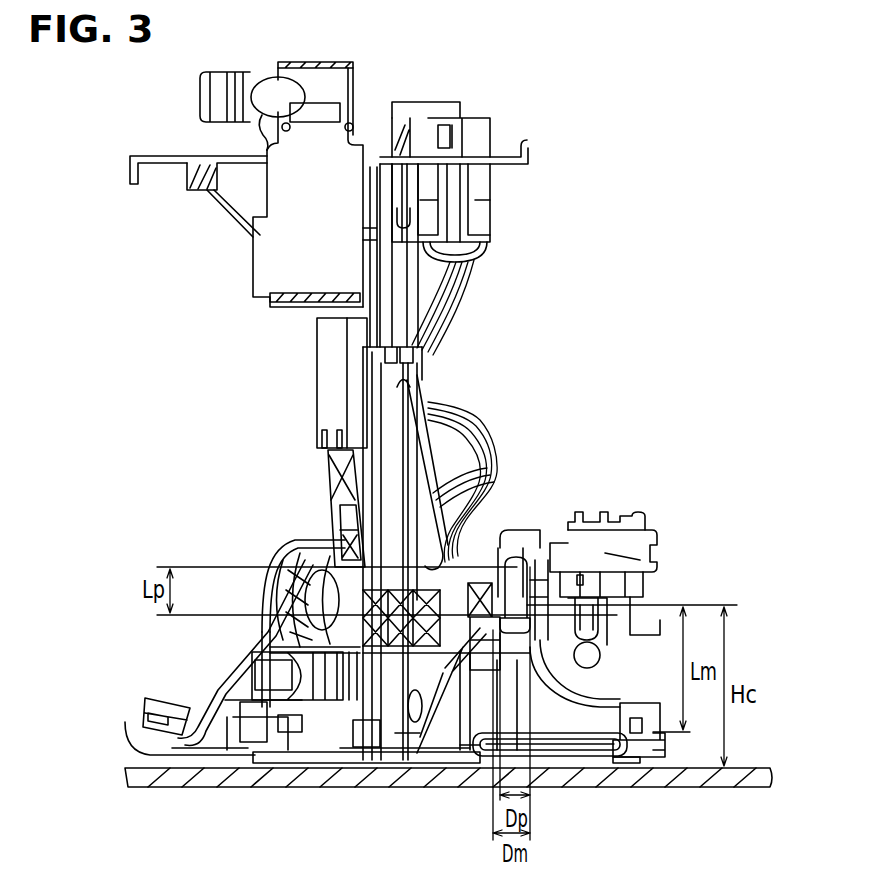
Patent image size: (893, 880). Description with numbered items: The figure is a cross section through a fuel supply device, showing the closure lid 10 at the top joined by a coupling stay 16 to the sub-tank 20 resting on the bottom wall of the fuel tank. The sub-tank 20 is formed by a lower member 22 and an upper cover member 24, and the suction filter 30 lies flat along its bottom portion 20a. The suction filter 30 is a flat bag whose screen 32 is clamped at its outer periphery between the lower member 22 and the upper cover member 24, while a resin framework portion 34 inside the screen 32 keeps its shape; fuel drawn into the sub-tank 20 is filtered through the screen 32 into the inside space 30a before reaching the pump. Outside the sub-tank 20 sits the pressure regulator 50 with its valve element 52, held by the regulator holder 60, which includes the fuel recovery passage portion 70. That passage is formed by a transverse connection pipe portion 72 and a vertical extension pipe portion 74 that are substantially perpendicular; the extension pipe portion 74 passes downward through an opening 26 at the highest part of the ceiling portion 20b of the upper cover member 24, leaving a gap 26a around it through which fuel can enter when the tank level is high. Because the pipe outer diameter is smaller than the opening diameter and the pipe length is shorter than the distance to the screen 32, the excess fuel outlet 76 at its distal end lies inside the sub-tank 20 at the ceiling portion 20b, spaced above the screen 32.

The closure lid 10 is at (527, 140).
The coupling stay 16 is at (317, 353).
The sub-tank 20 is at (110, 655).
The bottom portion 20a is at (468, 747).
The ceiling portion 20b is at (407, 735).
The lower member 22 is at (146, 720).
The upper cover member 24 is at (235, 670).
The opening 26 is at (543, 565).
The gap 26a is at (607, 627).
The suction filter 30 is at (576, 799).
The inside space 30a is at (646, 794).
The screen 32 is at (590, 748).
The framework portion 34 is at (563, 743).
The pressure regulator 50 is at (657, 566).
The valve element 52 is at (620, 555).
The regulator holder 60 is at (650, 504).
The fuel recovery passage portion 70 is at (540, 524).
The connection pipe portion 72 is at (532, 597).
The extension pipe portion 74 is at (512, 560).
The excess fuel outlet 76 is at (598, 648).